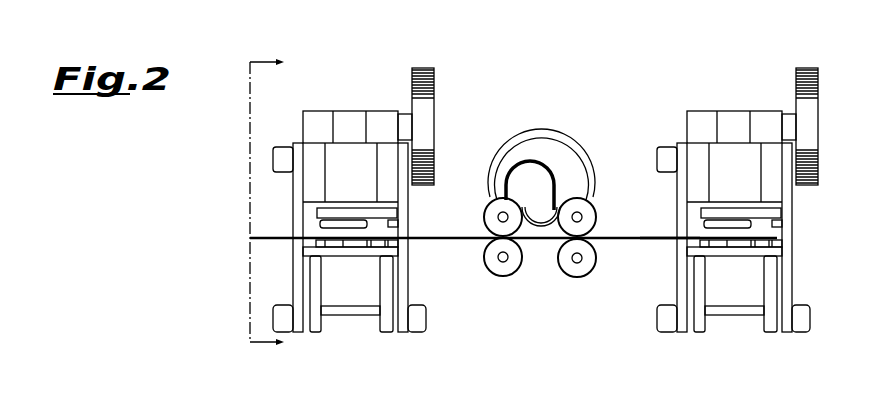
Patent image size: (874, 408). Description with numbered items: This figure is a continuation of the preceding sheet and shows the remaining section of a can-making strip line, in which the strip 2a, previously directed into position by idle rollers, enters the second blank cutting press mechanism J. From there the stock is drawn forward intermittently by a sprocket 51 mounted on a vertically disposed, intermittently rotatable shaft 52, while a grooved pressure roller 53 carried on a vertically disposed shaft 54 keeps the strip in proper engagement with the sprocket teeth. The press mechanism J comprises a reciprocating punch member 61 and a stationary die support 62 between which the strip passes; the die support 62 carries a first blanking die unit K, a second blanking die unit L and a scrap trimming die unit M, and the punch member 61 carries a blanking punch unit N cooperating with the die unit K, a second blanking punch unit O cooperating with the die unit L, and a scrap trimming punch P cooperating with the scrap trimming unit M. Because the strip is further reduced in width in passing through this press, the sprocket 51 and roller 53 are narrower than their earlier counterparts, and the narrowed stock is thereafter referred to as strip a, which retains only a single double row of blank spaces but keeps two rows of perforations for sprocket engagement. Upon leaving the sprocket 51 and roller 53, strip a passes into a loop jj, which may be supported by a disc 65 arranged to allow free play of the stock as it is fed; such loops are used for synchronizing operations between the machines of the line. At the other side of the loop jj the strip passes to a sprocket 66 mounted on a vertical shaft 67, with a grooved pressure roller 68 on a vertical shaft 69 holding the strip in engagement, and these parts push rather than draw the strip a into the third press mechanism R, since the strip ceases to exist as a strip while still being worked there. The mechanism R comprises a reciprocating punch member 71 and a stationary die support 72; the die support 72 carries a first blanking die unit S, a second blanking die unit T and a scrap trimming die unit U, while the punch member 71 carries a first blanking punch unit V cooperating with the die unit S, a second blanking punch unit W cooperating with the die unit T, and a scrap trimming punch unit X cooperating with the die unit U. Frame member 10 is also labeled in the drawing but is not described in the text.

The strip 2a is at (258, 237).
The frame member 10 is at (389, 195).
The sprocket 51 is at (494, 207).
The shaft 52 is at (498, 217).
The grooved pressure roller 53 is at (503, 266).
The shaft 54 is at (498, 257).
The reciprocating punch member 61 is at (349, 211).
The stationary die support 62 is at (312, 252).
The disc 65 is at (558, 148).
The sprocket 66 is at (595, 217).
The vertical shaft 67 is at (581, 215).
The grooved pressure roller 68 is at (590, 262).
The vertical shaft 69 is at (578, 263).
The reciprocating punch member 71 is at (716, 199).
The stationary die support 72 is at (762, 260).
The second blank cutting press mechanism J is at (353, 200).
The loop jj is at (546, 196).
The third press mechanism R is at (737, 200).
The blanking punch unit N is at (312, 224).
The second blanking punch unit O is at (359, 223).
The scrap trimming punch P is at (391, 222).
The first blanking die unit K is at (311, 244).
The scrap trimming die unit M is at (357, 243).
The second blanking die unit L is at (350, 251).
The first blanking punch unit V is at (716, 217).
The second blanking punch unit W is at (743, 198).
The scrap trimming punch unit X is at (801, 217).
The scrap trimming die unit U is at (769, 256).
The first blanking die unit S is at (741, 243).
The second blanking die unit T is at (741, 243).
The narrowed strip a is at (648, 240).